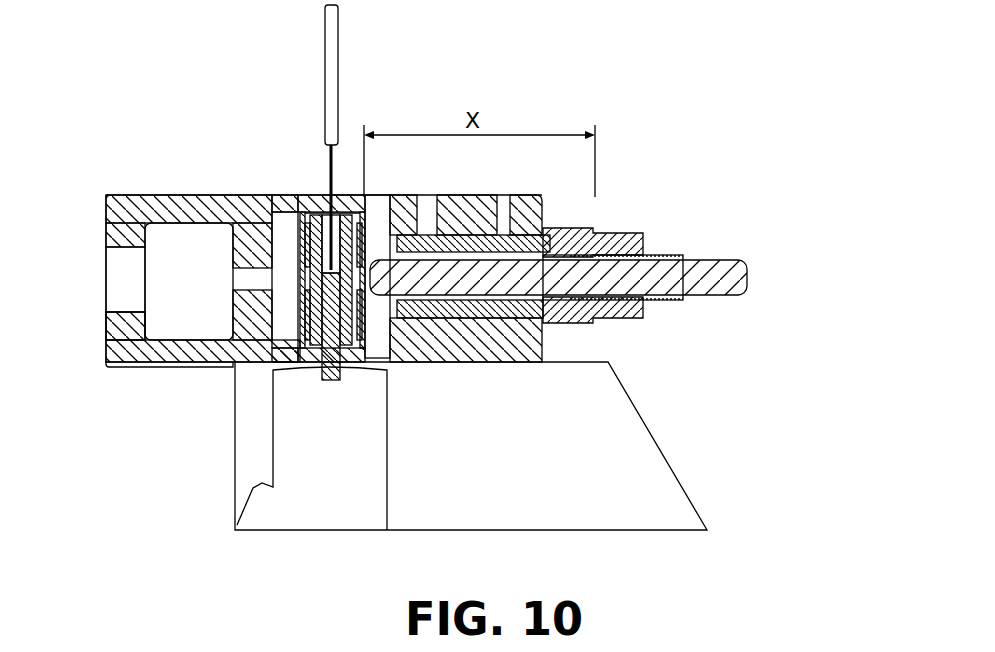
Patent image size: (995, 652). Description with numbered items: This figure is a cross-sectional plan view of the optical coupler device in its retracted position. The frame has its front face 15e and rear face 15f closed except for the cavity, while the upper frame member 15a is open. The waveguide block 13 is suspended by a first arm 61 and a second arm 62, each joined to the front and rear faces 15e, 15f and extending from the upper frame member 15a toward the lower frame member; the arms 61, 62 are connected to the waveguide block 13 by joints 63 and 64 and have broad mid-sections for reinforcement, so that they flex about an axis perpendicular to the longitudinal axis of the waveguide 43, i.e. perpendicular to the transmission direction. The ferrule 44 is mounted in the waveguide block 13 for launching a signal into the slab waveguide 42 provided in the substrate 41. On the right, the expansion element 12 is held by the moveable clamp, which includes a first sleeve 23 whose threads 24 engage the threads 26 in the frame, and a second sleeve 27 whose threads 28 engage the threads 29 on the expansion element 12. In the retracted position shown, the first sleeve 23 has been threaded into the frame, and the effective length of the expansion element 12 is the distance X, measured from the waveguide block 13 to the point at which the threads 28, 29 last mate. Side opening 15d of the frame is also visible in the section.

The expansion element 12 is at (747, 283).
The waveguide block 13 is at (300, 218).
The upper frame member 15a is at (108, 335).
The housing side opening 15d is at (100, 237).
The front face 15e is at (98, 192).
The rear face 15f is at (182, 380).
The first sleeve 23 is at (577, 320).
The threads 24 is at (505, 336).
The threads 26 is at (535, 215).
The second sleeve 27 is at (625, 232).
The threads 28 is at (650, 328).
The threads 29 is at (635, 275).
The substrate 41 is at (545, 465).
The slab waveguide 42 is at (345, 447).
The waveguide 43 is at (328, 58).
The ferrule 44 is at (335, 362).
The first arm 61 is at (385, 333).
The second arm 62 is at (282, 236).
The joint 63 is at (302, 272).
The joint 64 is at (405, 237).